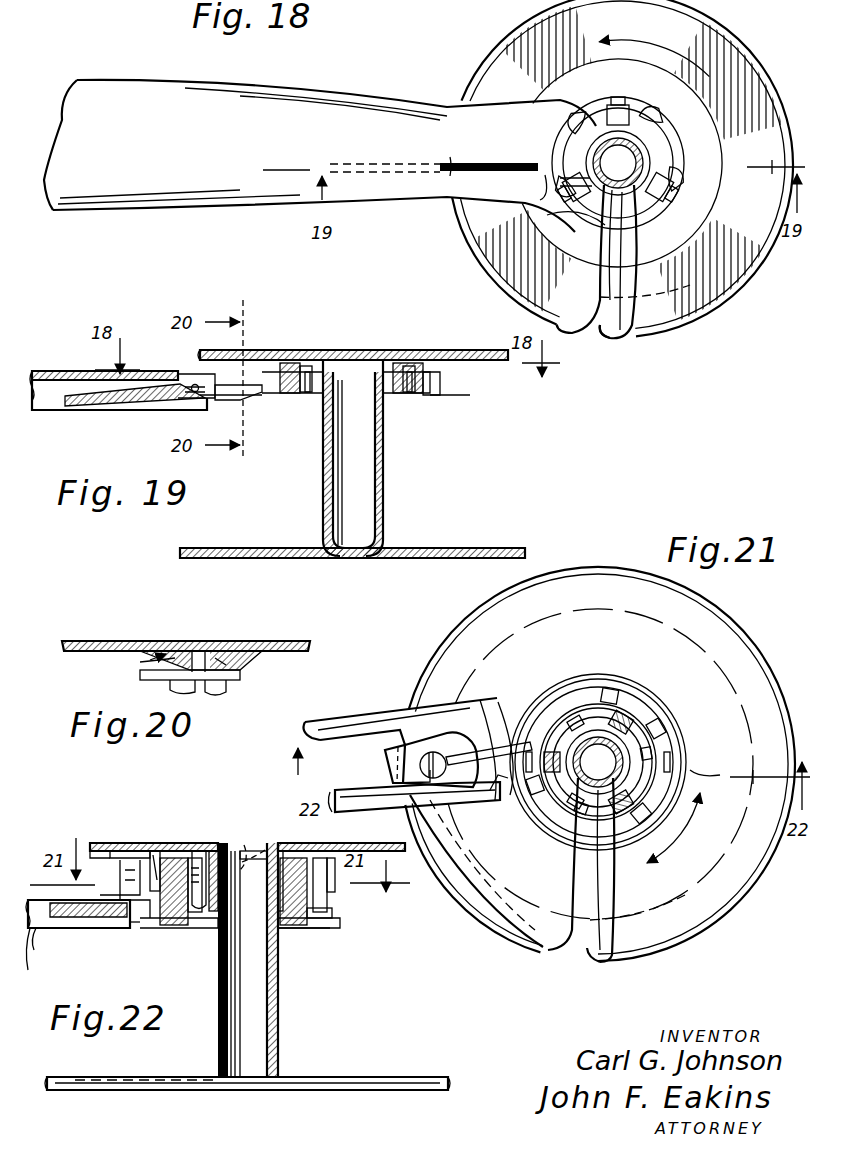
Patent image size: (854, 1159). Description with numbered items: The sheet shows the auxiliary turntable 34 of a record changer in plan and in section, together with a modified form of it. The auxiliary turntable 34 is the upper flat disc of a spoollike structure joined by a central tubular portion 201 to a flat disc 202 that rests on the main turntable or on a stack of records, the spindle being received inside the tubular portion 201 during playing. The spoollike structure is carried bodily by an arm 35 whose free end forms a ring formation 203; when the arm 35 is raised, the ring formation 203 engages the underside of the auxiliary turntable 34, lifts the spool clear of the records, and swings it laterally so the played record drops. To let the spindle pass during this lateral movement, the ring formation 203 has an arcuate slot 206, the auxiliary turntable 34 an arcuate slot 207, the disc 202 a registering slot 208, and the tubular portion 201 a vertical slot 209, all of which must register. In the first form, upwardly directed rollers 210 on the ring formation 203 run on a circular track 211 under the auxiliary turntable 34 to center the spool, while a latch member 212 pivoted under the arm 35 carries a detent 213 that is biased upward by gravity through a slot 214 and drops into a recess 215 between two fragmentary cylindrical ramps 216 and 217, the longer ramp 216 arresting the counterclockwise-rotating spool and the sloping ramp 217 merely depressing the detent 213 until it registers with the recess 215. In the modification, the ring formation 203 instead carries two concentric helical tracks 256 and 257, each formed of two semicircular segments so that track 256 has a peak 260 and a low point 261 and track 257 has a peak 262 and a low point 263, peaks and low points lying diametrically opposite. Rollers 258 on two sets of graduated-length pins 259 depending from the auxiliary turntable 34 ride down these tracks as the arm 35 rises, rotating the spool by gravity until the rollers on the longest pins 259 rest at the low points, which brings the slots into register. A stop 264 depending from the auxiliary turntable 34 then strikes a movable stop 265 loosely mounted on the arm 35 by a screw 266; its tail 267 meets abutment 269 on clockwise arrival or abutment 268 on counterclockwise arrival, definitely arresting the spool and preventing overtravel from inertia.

In FIG. 19, the auxiliary turntable 34 is at (255, 352).
In FIG. 20, the auxiliary turntable 34 is at (108, 640).
In FIG. 21, the auxiliary turntable 34 is at (600, 605).
In FIG. 22, the auxiliary turntable 34 is at (88, 842).
In FIG. 18, the arm 35 is at (177, 138).
In FIG. 19, the arm 35 is at (50, 370).
In FIG. 21, the arm 35 is at (325, 726).
In FIG. 22, the arm 35 is at (38, 928).
In FIG. 18, the central tubular portion 201 is at (690, 172).
In FIG. 19, the central tubular portion 201 is at (388, 448).
In FIG. 20, the central tubular portion 201 is at (232, 680).
In FIG. 21, the central tubular portion 201 is at (608, 875).
In FIG. 22, the central tubular portion 201 is at (280, 995).
In FIG. 18, the flat disc 202 is at (470, 250).
In FIG. 19, the flat disc 202 is at (462, 528).
In FIG. 21, the flat disc 202 is at (700, 878).
In FIG. 22, the flat disc 202 is at (315, 1078).
In FIG. 19, the ring formation 203 is at (440, 395).
In FIG. 21, the ring formation 203 is at (690, 776).
In FIG. 22, the ring formation 203 is at (290, 928).
In FIG. 18, the arcuate slot 206 is at (580, 245).
In FIG. 21, the arcuate slot 206 is at (575, 850).
In FIG. 18, the arcuate slot 207 is at (630, 290).
In FIG. 21, the arcuate slot 207 is at (592, 900).
In FIG. 18, the registering slot 208 is at (615, 340).
In FIG. 21, the registering slot 208 is at (588, 950).
In FIG. 22, the registering slot 208 is at (210, 1075).
In FIG. 18, the vertical slot 209 is at (628, 240).
In FIG. 21, the vertical slot 209 is at (598, 782).
In FIG. 22, the vertical slot 209 is at (260, 1012).
In FIG. 18, the rollers 210 is at (630, 110).
In FIG. 19, the rollers 210 is at (395, 358).
In FIG. 18, the circular track 211 is at (545, 120).
In FIG. 19, the circular track 211 is at (283, 363).
In FIG. 19, the latch member 212 is at (170, 410).
In FIG. 18, the detent 213 is at (535, 190).
In FIG. 19, the detent 213 is at (262, 395).
In FIG. 18, the slot 214 is at (545, 215).
In FIG. 19, the slot 214 is at (185, 374).
In FIG. 20, the recess 215 is at (212, 695).
In FIG. 18, the fragmentary cylindrical ramp 216 is at (520, 152).
In FIG. 20, the fragmentary cylindrical ramp 216 is at (170, 688).
In FIG. 18, the fragmentary cylindrical ramp 217 is at (472, 205).
In FIG. 20, the fragmentary cylindrical ramp 217 is at (235, 666).
In FIG. 21, the track 256 is at (560, 685).
In FIG. 22, the track 256 is at (204, 851).
In FIG. 21, the track 257 is at (655, 745).
In FIG. 22, the track 257 is at (250, 851).
In FIG. 21, the rollers 258 is at (606, 690).
In FIG. 22, the rollers 258 is at (192, 926).
In FIG. 21, the pins 259 is at (668, 705).
In FIG. 22, the pins 259 is at (175, 926).
In FIG. 21, the peak 260 is at (545, 705).
In FIG. 22, the peak 260 is at (160, 851).
In FIG. 21, the low point 261 is at (720, 775).
In FIG. 22, the low point 261 is at (322, 918).
In FIG. 21, the peak 262 is at (665, 752).
In FIG. 22, the peak 262 is at (330, 875).
In FIG. 21, the low point 263 is at (530, 820).
In FIG. 22, the low point 263 is at (175, 945).
In FIG. 21, the stop 264 is at (500, 800).
In FIG. 22, the stop 264 is at (142, 851).
In FIG. 21, the movable stop 265 is at (462, 748).
In FIG. 22, the movable stop 265 is at (128, 895).
In FIG. 21, the screw 266 is at (432, 747).
In FIG. 22, the screw 266 is at (135, 928).
In FIG. 21, the tail 267 is at (390, 768).
In FIG. 22, the tail 267 is at (36, 950).
In FIG. 21, the abutment 268 is at (385, 745).
In FIG. 22, the abutment 268 is at (28, 970).
In FIG. 21, the abutment 269 is at (385, 782).